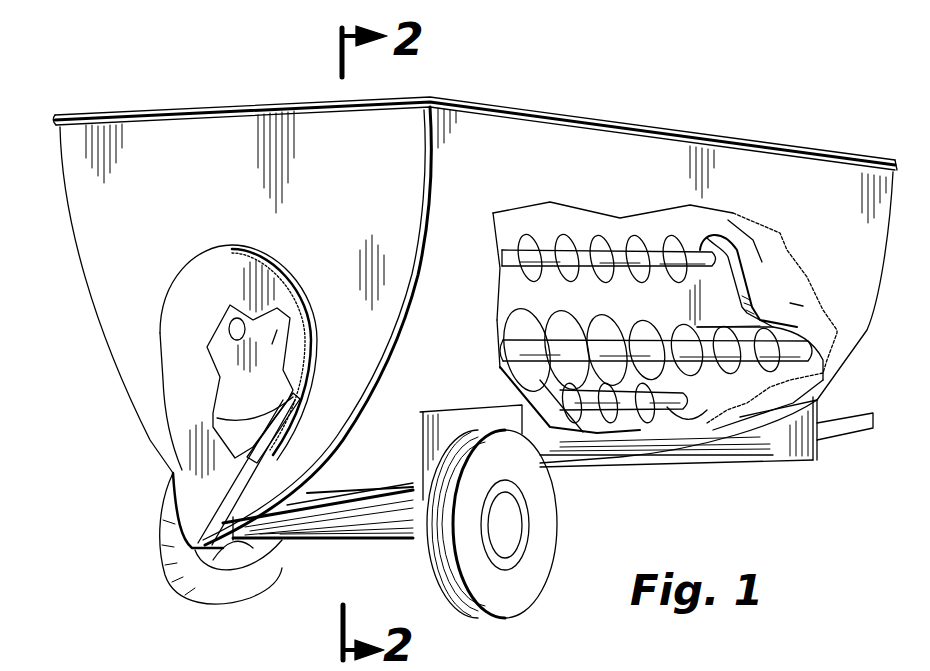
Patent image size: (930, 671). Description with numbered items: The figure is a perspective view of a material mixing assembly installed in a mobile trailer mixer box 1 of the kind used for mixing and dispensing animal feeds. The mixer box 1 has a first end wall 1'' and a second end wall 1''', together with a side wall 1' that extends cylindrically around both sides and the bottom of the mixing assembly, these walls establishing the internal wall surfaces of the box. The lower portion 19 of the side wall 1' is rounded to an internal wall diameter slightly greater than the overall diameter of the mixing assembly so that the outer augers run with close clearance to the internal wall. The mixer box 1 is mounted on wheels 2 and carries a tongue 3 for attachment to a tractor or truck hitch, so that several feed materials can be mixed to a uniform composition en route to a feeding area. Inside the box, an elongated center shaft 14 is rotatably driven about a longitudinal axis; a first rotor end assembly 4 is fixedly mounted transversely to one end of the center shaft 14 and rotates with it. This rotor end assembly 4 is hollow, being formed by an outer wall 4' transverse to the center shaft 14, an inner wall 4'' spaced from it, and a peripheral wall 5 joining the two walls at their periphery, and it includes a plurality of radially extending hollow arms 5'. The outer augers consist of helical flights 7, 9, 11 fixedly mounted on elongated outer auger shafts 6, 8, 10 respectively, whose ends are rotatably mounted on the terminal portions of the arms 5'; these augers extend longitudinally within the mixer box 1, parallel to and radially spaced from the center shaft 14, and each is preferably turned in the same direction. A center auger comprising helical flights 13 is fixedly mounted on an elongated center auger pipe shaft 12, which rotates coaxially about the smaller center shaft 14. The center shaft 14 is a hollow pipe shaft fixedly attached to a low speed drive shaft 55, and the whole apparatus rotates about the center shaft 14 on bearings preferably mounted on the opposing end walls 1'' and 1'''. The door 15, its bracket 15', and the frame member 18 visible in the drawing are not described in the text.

The mixer box 1 is at (475, 296).
The side wall 1' is at (533, 102).
The first end wall 1'' is at (846, 308).
The second end wall 1''' is at (152, 101).
The wheels 2 is at (530, 598).
The tongue 3 is at (848, 427).
The first rotor end assembly 4 is at (779, 318).
The outer wall 4' is at (772, 241).
The inner wall 4'' is at (774, 203).
The peripheral wall 5 is at (765, 282).
The hollow arms 5' is at (748, 213).
The outer auger shaft 6 is at (630, 252).
The helical flight 7 is at (582, 238).
The outer auger shaft 8 is at (520, 353).
The helical flight 9 is at (540, 361).
The outer auger shaft 10 is at (667, 400).
The helical flight 11 is at (607, 420).
The center auger pipe shaft 12 is at (527, 327).
The helical flight 13 is at (557, 307).
The center shaft 14 is at (830, 330).
The discharge door 15 is at (244, 354).
The door bracket 15' is at (268, 469).
The frame 18 is at (300, 515).
The lower portion 19 is at (150, 435).
The low speed drive shaft 55 is at (227, 310).